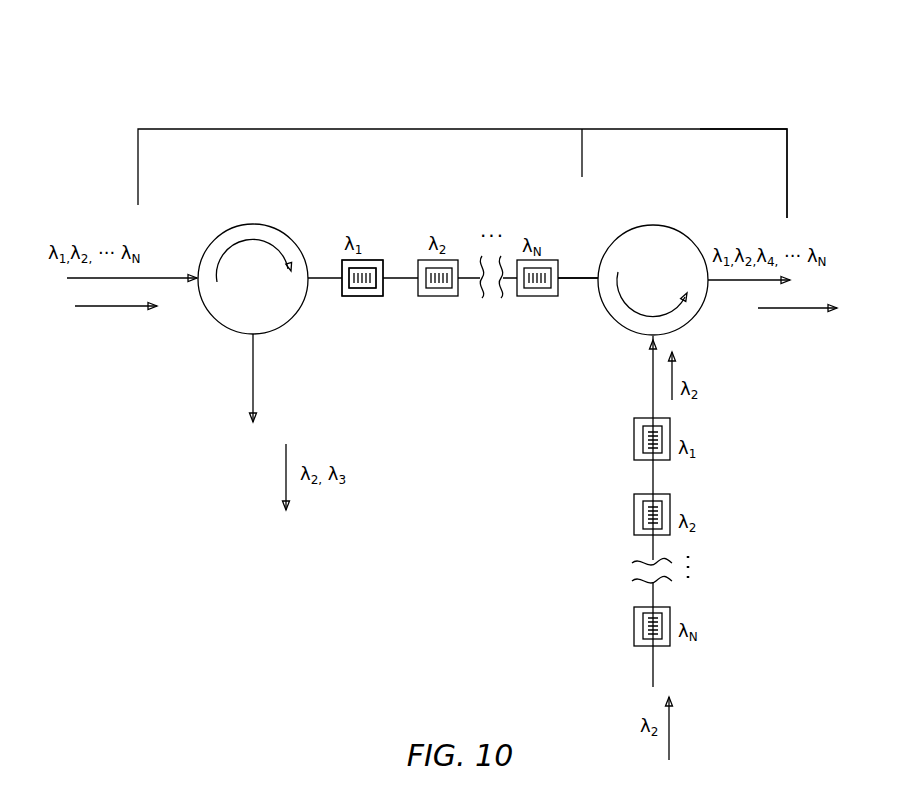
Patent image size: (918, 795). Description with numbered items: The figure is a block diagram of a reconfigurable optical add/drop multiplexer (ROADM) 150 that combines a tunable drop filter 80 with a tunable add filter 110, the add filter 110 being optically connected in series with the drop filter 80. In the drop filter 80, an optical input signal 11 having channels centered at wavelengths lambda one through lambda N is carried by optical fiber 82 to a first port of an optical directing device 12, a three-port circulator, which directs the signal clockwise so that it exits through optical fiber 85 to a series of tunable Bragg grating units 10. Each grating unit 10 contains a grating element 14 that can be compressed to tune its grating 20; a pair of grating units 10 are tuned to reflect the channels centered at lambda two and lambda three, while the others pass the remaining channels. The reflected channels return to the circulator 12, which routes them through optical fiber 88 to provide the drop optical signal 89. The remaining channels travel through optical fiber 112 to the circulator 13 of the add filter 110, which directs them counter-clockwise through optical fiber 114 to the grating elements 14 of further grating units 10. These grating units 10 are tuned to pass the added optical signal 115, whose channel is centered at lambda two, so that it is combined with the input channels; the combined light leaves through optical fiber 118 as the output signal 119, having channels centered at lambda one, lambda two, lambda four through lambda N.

The reconfigurable optical add/drop multiplexer 150 is at (530, 76).
The tunable drop filter 80 is at (458, 119).
The tunable add filter 110 is at (702, 119).
The optical directing device 12 is at (252, 224).
The circulator 13 is at (651, 224).
The optical fiber 82 is at (173, 272).
The optical input signal 11 is at (113, 312).
The optical fiber 85 is at (325, 276).
The grating element 14 is at (372, 267).
The grating 20 is at (361, 284).
The tunable Bragg grating unit 10 is at (358, 307).
The optical fiber 112 is at (577, 276).
The optical fiber 88 is at (256, 383).
The drop optical signal 89 is at (283, 470).
The optical fiber 118 is at (727, 283).
The output signal 119 is at (795, 310).
The optical fiber 114 is at (650, 377).
The added optical signal 115 is at (676, 722).